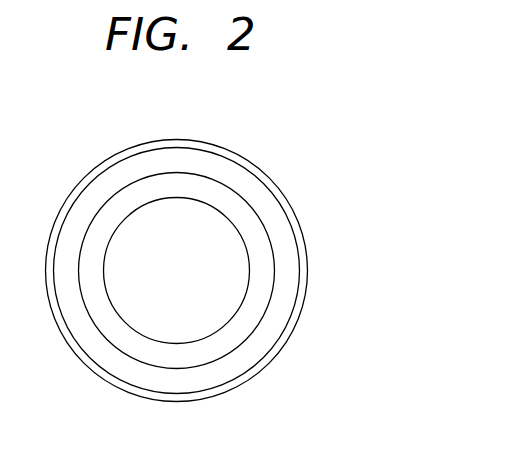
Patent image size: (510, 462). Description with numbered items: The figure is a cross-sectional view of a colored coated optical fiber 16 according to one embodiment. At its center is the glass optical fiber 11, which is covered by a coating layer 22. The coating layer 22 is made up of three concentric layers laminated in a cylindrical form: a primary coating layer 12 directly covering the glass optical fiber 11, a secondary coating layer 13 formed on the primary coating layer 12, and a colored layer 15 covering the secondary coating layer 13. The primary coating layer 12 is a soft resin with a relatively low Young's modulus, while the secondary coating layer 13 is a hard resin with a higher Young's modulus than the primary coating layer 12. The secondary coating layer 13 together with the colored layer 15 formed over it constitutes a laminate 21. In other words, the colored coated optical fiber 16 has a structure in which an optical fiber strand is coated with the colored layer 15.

The glass optical fiber 11 is at (180, 235).
The primary coating layer 12 is at (268, 287).
The secondary coating layer 13 is at (263, 348).
The colored layer 15 is at (232, 388).
The colored coated optical fiber 16 is at (317, 195).
The laminate of the secondary coating layer and the colored layer 21 is at (357, 335).
The coating layer 22 is at (403, 260).